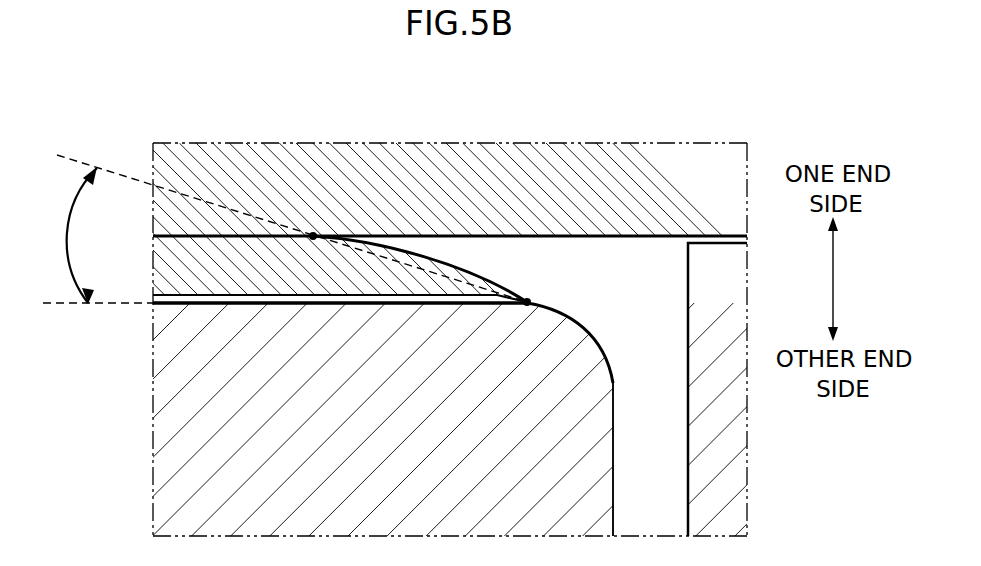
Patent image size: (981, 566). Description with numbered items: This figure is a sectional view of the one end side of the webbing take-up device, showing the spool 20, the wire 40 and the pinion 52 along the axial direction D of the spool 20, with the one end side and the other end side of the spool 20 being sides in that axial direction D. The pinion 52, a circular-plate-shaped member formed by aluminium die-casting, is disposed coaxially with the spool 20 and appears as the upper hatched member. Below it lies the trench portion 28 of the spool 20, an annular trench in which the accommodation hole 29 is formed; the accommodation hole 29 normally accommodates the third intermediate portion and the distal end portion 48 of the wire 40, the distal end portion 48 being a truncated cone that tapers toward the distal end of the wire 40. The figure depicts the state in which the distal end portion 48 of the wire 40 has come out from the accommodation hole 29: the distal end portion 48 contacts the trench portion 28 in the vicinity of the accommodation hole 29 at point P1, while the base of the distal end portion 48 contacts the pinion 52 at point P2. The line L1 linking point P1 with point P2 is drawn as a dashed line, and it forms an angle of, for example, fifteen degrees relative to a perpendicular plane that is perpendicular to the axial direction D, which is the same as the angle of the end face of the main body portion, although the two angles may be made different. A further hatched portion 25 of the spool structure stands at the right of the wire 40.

The spool 20 is at (152, 400).
The wall portion 25 is at (728, 283).
The trench portion 28 is at (205, 304).
The accommodation hole 29 is at (613, 437).
The wire 40 is at (529, 291).
The distal end portion 48 is at (452, 258).
The pinion 52 is at (700, 170).
The point P1 is at (531, 302).
The point P2 is at (313, 232).
The line L1 is at (124, 176).
The axial direction D is at (843, 279).